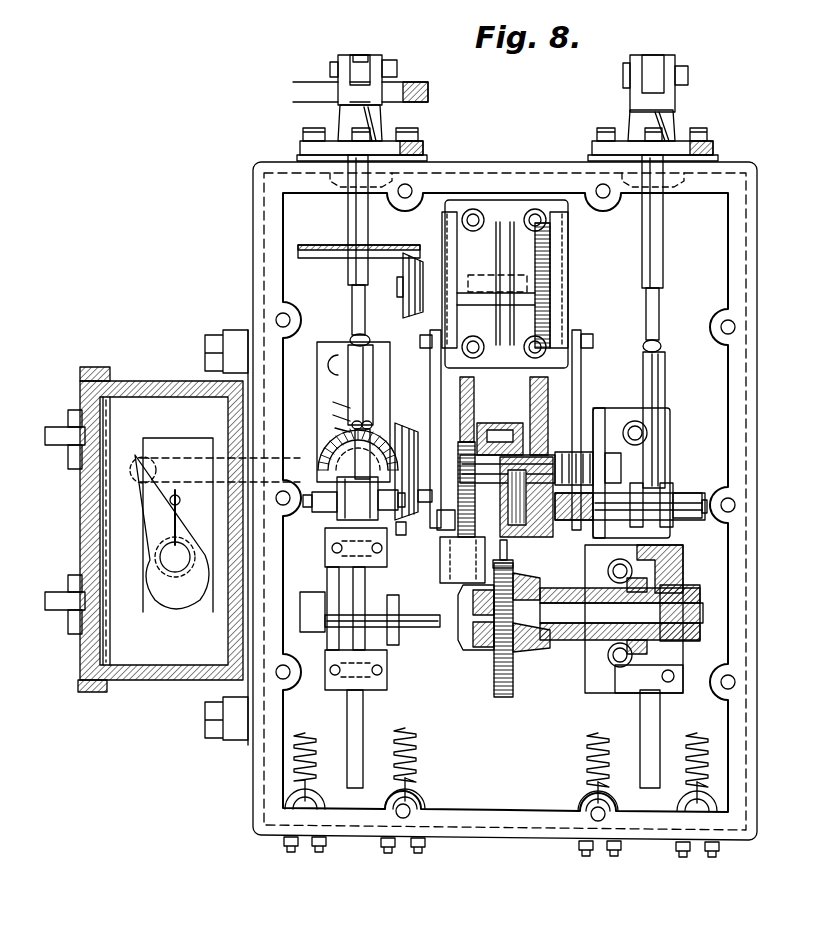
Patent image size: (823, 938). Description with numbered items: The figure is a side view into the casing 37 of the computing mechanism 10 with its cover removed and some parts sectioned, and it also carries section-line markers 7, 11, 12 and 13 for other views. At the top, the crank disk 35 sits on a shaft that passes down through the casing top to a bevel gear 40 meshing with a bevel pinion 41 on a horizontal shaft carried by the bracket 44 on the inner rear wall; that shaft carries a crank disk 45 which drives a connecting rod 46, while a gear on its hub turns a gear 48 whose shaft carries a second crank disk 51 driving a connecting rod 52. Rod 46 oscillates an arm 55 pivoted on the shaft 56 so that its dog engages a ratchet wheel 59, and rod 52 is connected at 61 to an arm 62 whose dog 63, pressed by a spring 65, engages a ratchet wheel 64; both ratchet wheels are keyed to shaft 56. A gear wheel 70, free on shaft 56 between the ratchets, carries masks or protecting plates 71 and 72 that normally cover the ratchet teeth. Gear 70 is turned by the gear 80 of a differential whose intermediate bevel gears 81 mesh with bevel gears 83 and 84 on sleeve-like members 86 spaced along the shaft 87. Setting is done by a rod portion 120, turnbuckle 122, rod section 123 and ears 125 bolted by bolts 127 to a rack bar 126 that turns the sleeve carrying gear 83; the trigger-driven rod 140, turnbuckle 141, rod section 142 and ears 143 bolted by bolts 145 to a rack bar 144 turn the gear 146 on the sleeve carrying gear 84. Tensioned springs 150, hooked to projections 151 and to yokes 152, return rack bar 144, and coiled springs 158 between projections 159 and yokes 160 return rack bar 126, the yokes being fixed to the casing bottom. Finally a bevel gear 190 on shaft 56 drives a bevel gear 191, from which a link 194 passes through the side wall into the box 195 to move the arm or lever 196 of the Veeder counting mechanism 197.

The section line 7- 7 is at (301, 508).
The computing mechanism 10 is at (484, 286).
The section line 11- 11 is at (446, 497).
The section line 12- 12 is at (538, 496).
The section line 13- 13 is at (352, 589).
The crank disk 35 is at (407, 84).
The casing 37 is at (253, 242).
The bevel gear 40 is at (322, 259).
The bevel pinion 41 is at (412, 316).
The bracket 44 is at (493, 200).
The crank disk 45 is at (569, 317).
The connecting rod 46 is at (582, 394).
The gear 48 is at (552, 250).
The crank disk 51 is at (458, 257).
The connecting rod 52 is at (431, 386).
The arm 55 is at (560, 478).
The shaft 56 is at (685, 447).
The ratchet wheel 59 is at (562, 409).
The connection 61 is at (402, 531).
The arm 62 is at (437, 530).
The dog 63 is at (455, 553).
The ratchet wheel 64 is at (468, 372).
The spring 65 is at (472, 572).
The gear wheel 70 is at (497, 412).
The mask or protecting plate 71 is at (507, 416).
The mask or protecting plate 72 is at (476, 398).
The gear 80 is at (495, 688).
The intermediate bevel gears 81 is at (545, 566).
The bevel gear 83 is at (412, 630).
The bevel gear 84 is at (553, 651).
The sleeve-like members 86 is at (393, 645).
The shaft 87 is at (705, 608).
The rod portion 120 is at (350, 320).
The turnbuckle 122 is at (346, 386).
The rod section 123 is at (334, 446).
The ears 125 is at (332, 511).
The rack bar 126 is at (365, 707).
The bolts 127 is at (328, 538).
The rod 140 is at (664, 302).
The turnbuckle 141 is at (666, 378).
The rod section 142 is at (666, 433).
The ears 143 is at (684, 496).
The rack bar 144 is at (638, 718).
The bolts 145 is at (674, 483).
The gear 146 is at (680, 650).
The tensioned springs 150 is at (588, 758).
The projections 151 is at (704, 514).
The yokes 152 is at (680, 803).
The coiled springs 158 is at (307, 731).
The projections 159 is at (310, 492).
The yokes 160 is at (385, 801).
The bevel gear 190 is at (410, 424).
The bevel gear 191 is at (335, 423).
The link or connecting bar 194 is at (193, 457).
The box 195 is at (152, 381).
The arm or lever 196 is at (172, 500).
The counting mechanism 197 is at (167, 615).